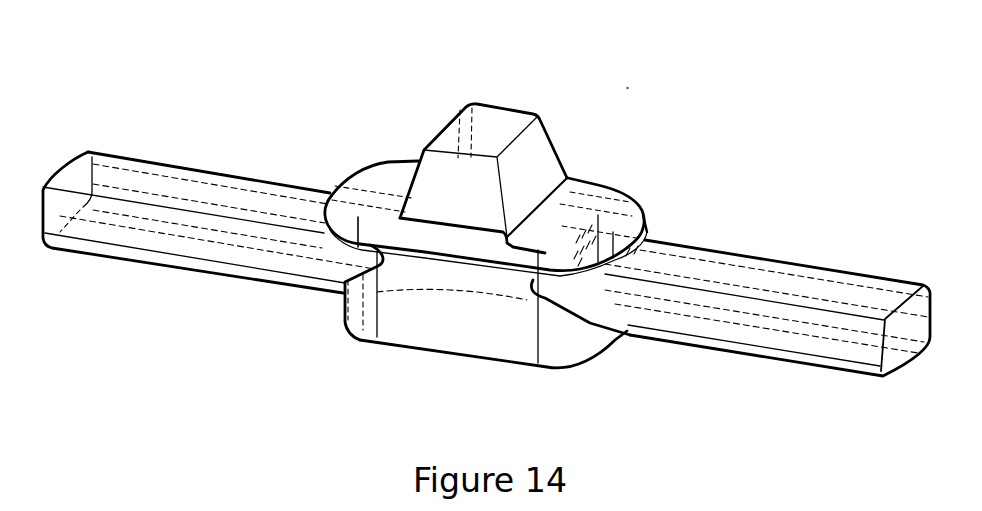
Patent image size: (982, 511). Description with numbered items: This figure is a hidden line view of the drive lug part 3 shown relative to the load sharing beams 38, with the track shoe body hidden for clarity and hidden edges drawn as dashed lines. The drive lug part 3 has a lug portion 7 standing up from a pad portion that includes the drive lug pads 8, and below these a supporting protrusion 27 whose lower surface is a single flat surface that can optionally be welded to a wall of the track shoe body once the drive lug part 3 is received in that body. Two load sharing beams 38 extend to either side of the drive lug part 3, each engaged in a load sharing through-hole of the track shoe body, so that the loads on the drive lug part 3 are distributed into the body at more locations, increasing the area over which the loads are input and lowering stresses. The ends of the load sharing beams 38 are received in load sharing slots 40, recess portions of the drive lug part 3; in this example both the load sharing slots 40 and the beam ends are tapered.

The drive lug part 3 is at (634, 81).
The lug portion 7 is at (503, 116).
The drive lug pads 8 is at (387, 180).
The supporting protrusion 27 is at (437, 325).
The load sharing beam 38 is at (788, 280).
The load sharing slots 40 is at (350, 327).